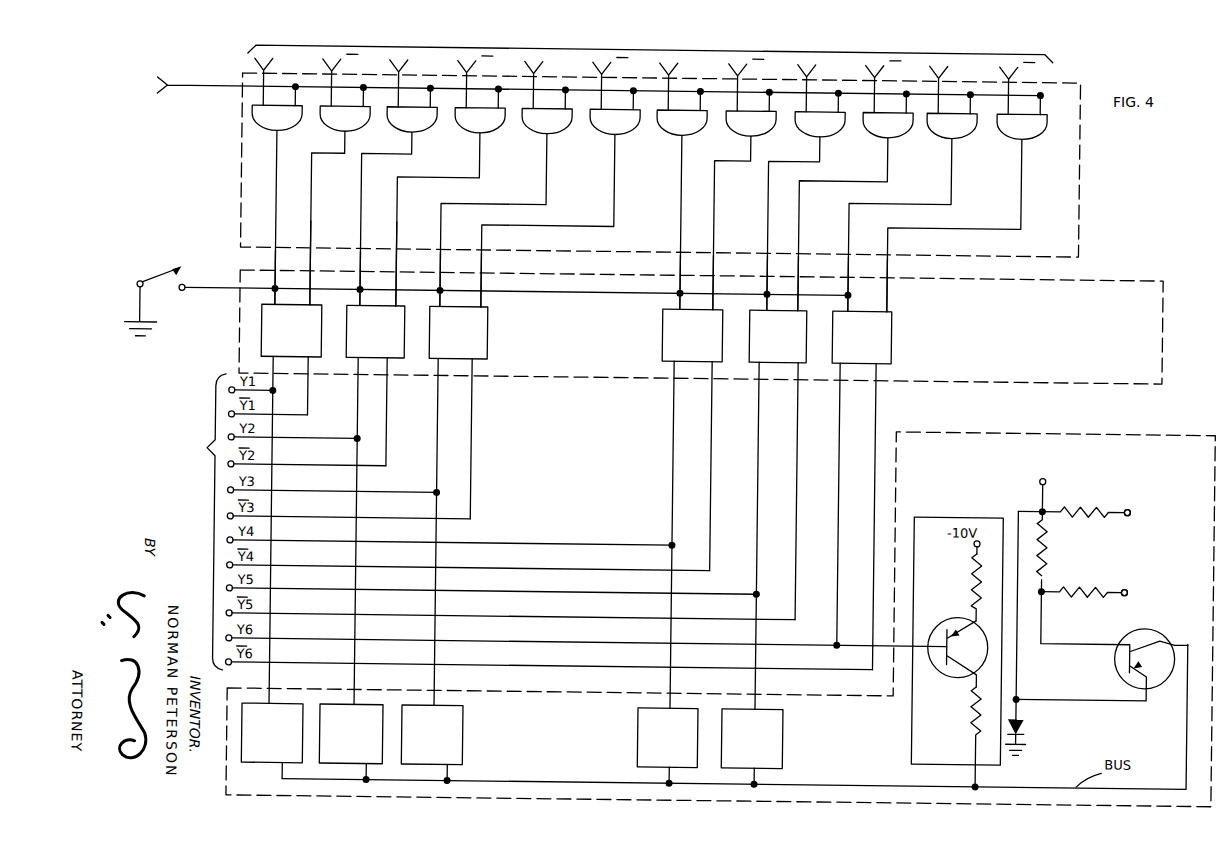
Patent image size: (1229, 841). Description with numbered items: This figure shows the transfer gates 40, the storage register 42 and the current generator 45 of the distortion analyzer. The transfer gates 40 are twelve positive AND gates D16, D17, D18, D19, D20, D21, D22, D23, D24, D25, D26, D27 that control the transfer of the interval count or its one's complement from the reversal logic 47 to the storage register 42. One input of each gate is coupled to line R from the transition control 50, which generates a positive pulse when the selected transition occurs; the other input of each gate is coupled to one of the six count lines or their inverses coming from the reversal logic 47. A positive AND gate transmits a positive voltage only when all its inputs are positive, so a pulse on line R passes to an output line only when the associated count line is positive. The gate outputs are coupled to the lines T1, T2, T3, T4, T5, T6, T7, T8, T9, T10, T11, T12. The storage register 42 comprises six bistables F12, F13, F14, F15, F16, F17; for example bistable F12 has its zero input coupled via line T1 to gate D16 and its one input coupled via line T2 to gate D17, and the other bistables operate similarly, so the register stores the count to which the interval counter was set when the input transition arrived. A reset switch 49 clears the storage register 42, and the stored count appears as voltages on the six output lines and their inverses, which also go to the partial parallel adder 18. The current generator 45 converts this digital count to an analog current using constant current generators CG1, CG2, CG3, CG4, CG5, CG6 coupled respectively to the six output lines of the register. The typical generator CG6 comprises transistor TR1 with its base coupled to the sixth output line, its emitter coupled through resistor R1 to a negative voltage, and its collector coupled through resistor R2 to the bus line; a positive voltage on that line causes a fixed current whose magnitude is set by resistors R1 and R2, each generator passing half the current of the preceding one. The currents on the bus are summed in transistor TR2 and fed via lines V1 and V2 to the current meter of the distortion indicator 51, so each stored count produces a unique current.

The reversal logic 47 is at (650, 43).
The transition control 50 is at (186, 86).
The transfer gates 40 is at (661, 165).
The storage register 42 is at (701, 327).
The reset switch 49 is at (478, 294).
The partial parallel adder 18 is at (158, 521).
The current generator 45 is at (720, 615).
The distortion indicator 51 is at (1128, 552).
The positive AND gate D16 is at (297, 118).
The positive AND gate D17 is at (365, 118).
The positive AND gate D18 is at (432, 118).
The positive AND gate D19 is at (500, 118).
The positive AND gate D20 is at (567, 118).
The positive AND gate D21 is at (635, 118).
The positive AND gate D22 is at (702, 118).
The positive AND gate D23 is at (771, 118).
The positive AND gate D24 is at (840, 118).
The positive AND gate D25 is at (908, 118).
The positive AND gate D26 is at (972, 118).
The positive AND gate D27 is at (1042, 118).
The line T1 is at (275, 264).
The line T2 is at (312, 236).
The line T3 is at (360, 264).
The line T4 is at (398, 237).
The line T5 is at (440, 264).
The line T6 is at (483, 265).
The line T7 is at (680, 266).
The line T8 is at (713, 288).
The line T9 is at (767, 264).
The line T10 is at (798, 288).
The line T11 is at (848, 270).
The line T12 is at (889, 267).
The bistable F12 is at (289, 504).
The bistable F13 is at (373, 505).
The bistable F14 is at (456, 506).
The bistable F15 is at (690, 509).
The bistable F16 is at (776, 510).
The bistable F17 is at (859, 490).
The constant current generator CG1 is at (272, 741).
The constant current generator CG2 is at (351, 743).
The constant current generator CG3 is at (432, 744).
The constant current generator CG4 is at (667, 747).
The constant current generator CG5 is at (752, 748).
The constant current generator CG6 is at (957, 641).
The transistor TR1 is at (946, 674).
The transistor TR2 is at (1121, 652).
The resistor R1 is at (977, 572).
The resistor R2 is at (975, 724).
The line V1 is at (1074, 503).
The line V2 is at (1084, 601).